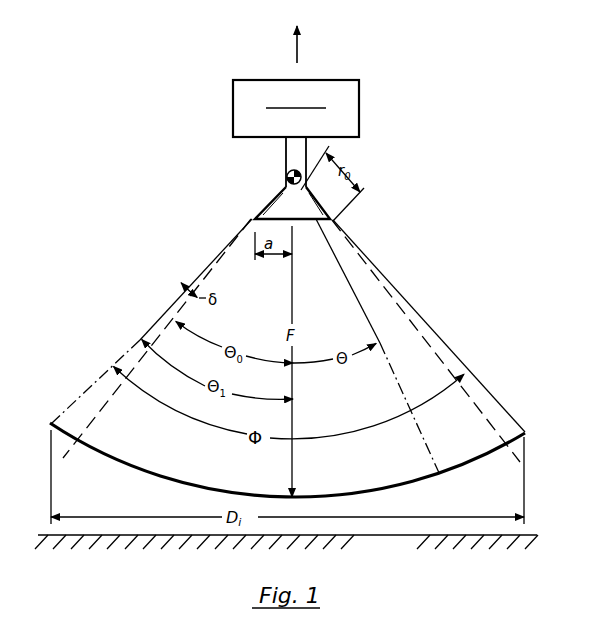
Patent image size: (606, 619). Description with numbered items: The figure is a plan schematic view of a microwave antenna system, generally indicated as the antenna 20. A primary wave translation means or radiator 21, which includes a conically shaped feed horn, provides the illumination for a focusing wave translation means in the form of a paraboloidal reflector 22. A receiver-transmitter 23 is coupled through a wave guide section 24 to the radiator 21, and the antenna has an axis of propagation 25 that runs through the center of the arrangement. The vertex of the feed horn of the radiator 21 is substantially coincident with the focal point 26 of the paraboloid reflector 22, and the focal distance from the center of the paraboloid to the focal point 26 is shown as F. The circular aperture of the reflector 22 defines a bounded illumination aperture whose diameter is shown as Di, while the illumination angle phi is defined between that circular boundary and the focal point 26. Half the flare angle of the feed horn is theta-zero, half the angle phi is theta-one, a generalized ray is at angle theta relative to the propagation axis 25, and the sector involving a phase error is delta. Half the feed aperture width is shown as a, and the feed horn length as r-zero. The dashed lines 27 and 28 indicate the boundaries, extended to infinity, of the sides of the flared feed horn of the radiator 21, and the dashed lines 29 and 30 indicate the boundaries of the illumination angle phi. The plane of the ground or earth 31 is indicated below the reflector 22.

The antenna 20 is at (405, 347).
The radiator 21 is at (270, 200).
The paraboloidal reflector 22 is at (396, 490).
The receiver-transmitter 23 is at (360, 109).
The wave guide section 24 is at (286, 152).
The axis of propagation 25 is at (299, 50).
The focal point 26 is at (287, 178).
The dashed line 27 is at (474, 403).
The dashed line 28 is at (109, 400).
The dashed line 29 is at (461, 352).
The dashed line 30 is at (147, 320).
The plane of ground 31 is at (364, 538).